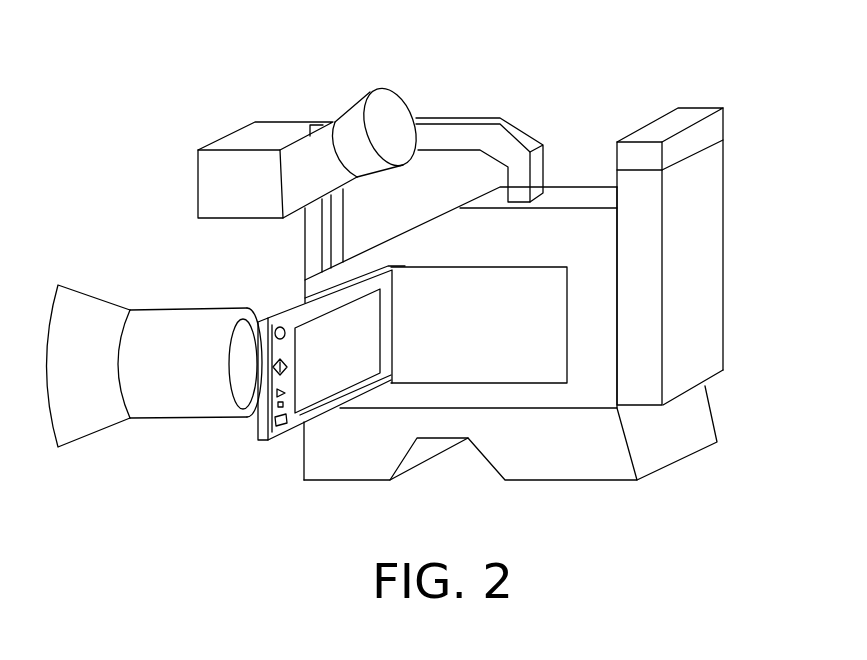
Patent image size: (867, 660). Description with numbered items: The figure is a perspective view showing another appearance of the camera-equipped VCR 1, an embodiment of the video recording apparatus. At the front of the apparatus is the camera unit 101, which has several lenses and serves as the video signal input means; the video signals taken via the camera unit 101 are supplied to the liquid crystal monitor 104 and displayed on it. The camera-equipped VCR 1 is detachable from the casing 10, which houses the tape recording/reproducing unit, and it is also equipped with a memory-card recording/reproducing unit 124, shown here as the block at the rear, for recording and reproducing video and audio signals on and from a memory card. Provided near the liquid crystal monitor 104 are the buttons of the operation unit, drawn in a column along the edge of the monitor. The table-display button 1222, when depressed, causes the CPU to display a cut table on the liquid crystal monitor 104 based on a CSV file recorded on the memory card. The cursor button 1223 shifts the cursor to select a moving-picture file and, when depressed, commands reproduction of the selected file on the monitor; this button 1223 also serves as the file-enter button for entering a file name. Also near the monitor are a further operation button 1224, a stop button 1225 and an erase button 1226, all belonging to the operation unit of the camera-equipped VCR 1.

The camera-equipped VCR 1 is at (598, 70).
The casing 10 is at (575, 198).
The camera unit 101 is at (157, 308).
The liquid crystal monitor 104 is at (323, 387).
The memory-card recording/reproducing unit 124 is at (710, 219).
The table-display button 1222 is at (285, 432).
The cursor button 1223 is at (278, 368).
The operation button 1224 is at (278, 393).
The stop button 1225 is at (273, 421).
The erase button 1226 is at (278, 327).